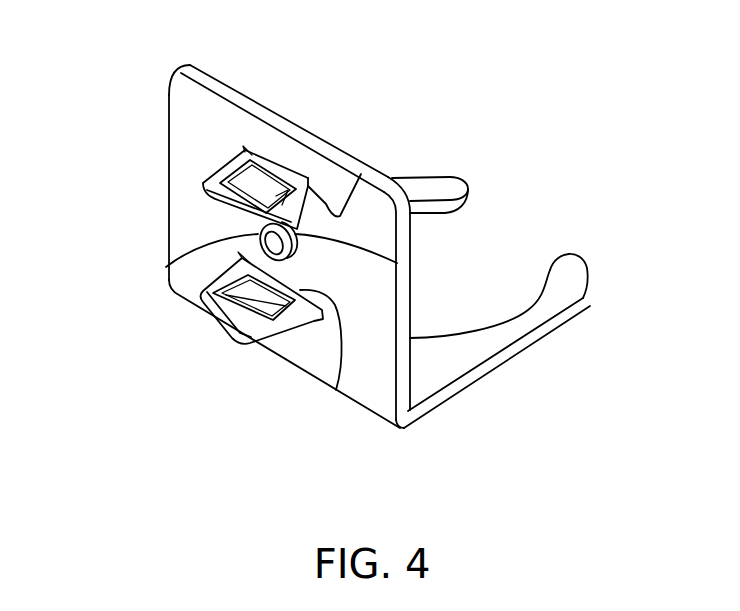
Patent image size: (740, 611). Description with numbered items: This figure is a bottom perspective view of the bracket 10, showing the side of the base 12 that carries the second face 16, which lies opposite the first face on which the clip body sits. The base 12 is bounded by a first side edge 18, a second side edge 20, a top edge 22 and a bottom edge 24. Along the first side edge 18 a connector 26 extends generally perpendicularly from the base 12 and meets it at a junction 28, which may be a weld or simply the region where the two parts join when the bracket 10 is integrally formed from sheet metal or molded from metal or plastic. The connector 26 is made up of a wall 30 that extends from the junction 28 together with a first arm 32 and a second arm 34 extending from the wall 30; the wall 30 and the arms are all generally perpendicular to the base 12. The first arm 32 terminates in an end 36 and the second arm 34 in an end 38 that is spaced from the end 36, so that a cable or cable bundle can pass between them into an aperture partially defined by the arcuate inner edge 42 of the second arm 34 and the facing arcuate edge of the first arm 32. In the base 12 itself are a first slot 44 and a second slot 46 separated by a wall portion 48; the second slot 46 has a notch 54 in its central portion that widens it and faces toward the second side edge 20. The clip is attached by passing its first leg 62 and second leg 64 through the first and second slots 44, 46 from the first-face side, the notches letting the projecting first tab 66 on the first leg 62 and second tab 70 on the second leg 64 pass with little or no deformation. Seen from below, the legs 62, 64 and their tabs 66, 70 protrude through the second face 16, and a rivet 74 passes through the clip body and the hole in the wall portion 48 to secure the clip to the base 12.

The bracket 10 is at (118, 305).
The base 12 is at (189, 270).
The second face 16 is at (192, 84).
The first side edge 18 is at (417, 410).
The second side edge 20 is at (263, 110).
The top edge 22 is at (405, 283).
The bottom edge 24 is at (168, 143).
The connector 26 is at (528, 396).
The junction 28 is at (398, 430).
The wall 30 is at (421, 375).
The first arm 32 is at (413, 178).
The second arm 34 is at (533, 326).
The end of first arm 36 is at (440, 188).
The end of second arm 38 is at (580, 266).
The arcuate inner edge 42 is at (522, 311).
The first slot 44 is at (336, 390).
The second slot 46 is at (340, 214).
The wall portion 48 is at (397, 263).
The notch 54 is at (287, 168).
The first leg 62 is at (293, 326).
The second leg 64 is at (203, 191).
The first tab 66 is at (254, 308).
The second tab 70 is at (240, 182).
The rivet 74 is at (166, 267).